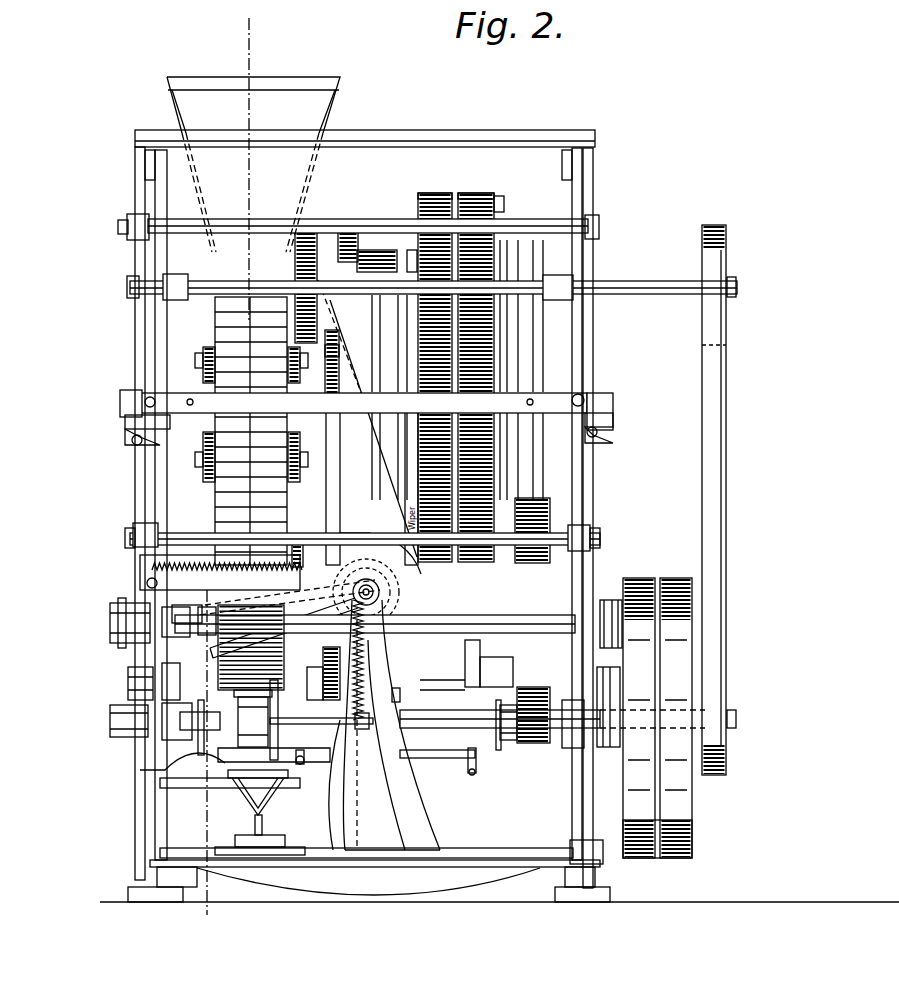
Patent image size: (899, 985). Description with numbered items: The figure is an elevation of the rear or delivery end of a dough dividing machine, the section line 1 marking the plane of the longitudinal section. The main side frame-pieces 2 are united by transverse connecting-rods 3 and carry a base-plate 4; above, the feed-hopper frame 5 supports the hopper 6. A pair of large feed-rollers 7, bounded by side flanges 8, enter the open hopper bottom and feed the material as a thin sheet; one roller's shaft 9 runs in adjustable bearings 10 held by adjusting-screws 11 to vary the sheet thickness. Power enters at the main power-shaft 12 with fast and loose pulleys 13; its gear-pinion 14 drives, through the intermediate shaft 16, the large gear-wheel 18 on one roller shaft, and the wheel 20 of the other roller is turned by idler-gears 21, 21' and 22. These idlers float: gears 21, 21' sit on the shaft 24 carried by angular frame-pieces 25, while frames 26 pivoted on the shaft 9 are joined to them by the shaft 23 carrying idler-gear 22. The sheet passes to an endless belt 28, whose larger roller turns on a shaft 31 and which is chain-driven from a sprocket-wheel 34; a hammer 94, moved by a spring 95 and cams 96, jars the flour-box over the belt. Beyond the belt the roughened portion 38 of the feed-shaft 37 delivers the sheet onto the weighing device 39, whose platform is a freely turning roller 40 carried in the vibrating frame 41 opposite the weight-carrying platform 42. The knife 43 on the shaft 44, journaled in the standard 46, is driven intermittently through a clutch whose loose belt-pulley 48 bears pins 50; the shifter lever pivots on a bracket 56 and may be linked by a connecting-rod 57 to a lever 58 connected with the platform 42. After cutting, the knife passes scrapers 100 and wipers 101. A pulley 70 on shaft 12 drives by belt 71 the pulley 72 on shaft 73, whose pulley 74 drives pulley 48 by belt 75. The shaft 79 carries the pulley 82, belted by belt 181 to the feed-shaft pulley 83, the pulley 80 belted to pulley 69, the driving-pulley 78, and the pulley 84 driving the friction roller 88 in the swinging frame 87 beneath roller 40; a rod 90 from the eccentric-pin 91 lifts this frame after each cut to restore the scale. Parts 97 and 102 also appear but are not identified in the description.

The section line I-I 1 is at (192, 937).
The main side frame-pieces 2 is at (136, 345).
The transverse connecting-rods 3 is at (242, 218).
The base-plate 4 is at (515, 847).
The feed-hopper frame 5 is at (253, 164).
The hopper 6 is at (265, 171).
The feed-rollers 7 is at (228, 325).
The side flanges 8 is at (286, 468).
The shaft 9 is at (613, 418).
The adjustable bearings 10 is at (605, 448).
The adjusting-screws 11 is at (612, 437).
The main power-shaft 12 is at (737, 720).
The fast and loose pulleys 13 is at (672, 885).
The gear-pinion 14 is at (545, 745).
The intermediate shaft 16 is at (555, 512).
The large gear-wheel 18 is at (416, 328).
The gear-wheel 20 is at (495, 468).
The idler-gear 21 is at (476, 180).
The idler-gear 21' is at (435, 180).
The idler-gear 22 is at (497, 203).
The shaft 23 is at (362, 248).
The shaft 24 is at (345, 233).
The angular frame-pieces 25 is at (378, 327).
The frames 26 is at (402, 366).
The endless belt 28 is at (219, 768).
The shaft 31 is at (322, 672).
The sprocket-wheel 34 is at (339, 350).
The feed-shaft 37 is at (482, 615).
The roughened portion 38 is at (207, 617).
The weighing device 39 is at (260, 834).
The scale-platform roller 40 is at (251, 647).
The vibrating frame 41 is at (128, 677).
The weight-carrying platform 42 is at (276, 788).
The knife 43 is at (340, 625).
The knife-shaft 44 is at (380, 592).
The standard 46 is at (389, 725).
The belt-pulley 48 is at (385, 554).
The pins 50 is at (383, 540).
The bracket 56 is at (389, 690).
The connecting-rod 57 is at (500, 740).
The lever 58 is at (437, 765).
The pulley 69 is at (513, 672).
The pulley 70 is at (727, 757).
The belt 71 is at (737, 497).
The pulley 72 is at (727, 252).
The shaft 73 is at (432, 279).
The pulley 74 is at (300, 270).
The belt 75 is at (327, 336).
The pulley 78 is at (408, 712).
The shaft 79 is at (445, 752).
The pulley 80 is at (508, 748).
The pulley 82 is at (587, 742).
The pulley 83 is at (603, 610).
The pulley 84 is at (255, 690).
The swinging frame 87 is at (207, 745).
The friction roller 88 is at (253, 722).
The rod 90 is at (363, 712).
The eccentric-pin 91 is at (363, 592).
The hammer 94 is at (310, 607).
The spring 95 is at (150, 577).
The cams 96 is at (300, 765).
The gear 97 is at (295, 548).
The scrapers 100 is at (334, 487).
The wipers 101 is at (362, 462).
The link 102 is at (333, 767).
The belt 181 is at (620, 672).